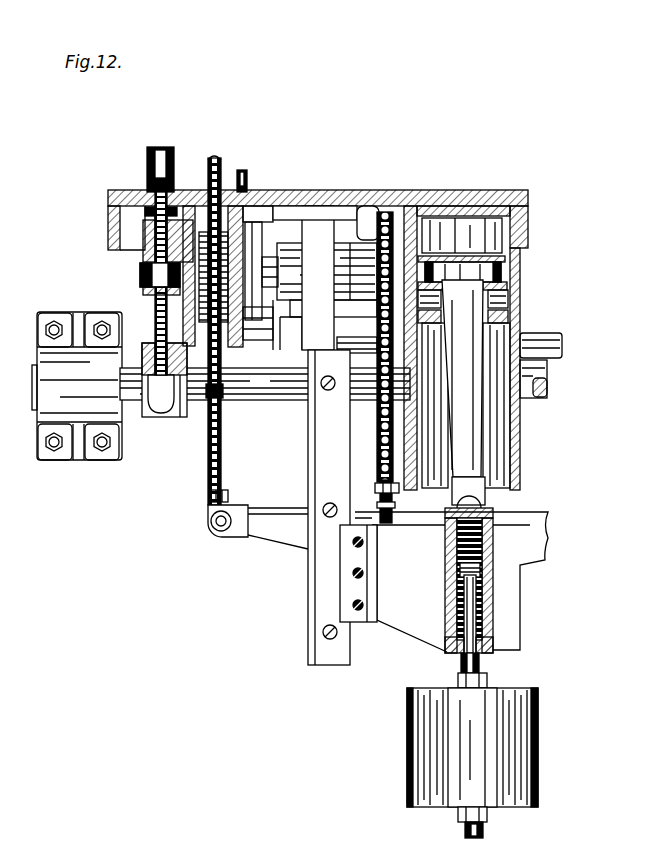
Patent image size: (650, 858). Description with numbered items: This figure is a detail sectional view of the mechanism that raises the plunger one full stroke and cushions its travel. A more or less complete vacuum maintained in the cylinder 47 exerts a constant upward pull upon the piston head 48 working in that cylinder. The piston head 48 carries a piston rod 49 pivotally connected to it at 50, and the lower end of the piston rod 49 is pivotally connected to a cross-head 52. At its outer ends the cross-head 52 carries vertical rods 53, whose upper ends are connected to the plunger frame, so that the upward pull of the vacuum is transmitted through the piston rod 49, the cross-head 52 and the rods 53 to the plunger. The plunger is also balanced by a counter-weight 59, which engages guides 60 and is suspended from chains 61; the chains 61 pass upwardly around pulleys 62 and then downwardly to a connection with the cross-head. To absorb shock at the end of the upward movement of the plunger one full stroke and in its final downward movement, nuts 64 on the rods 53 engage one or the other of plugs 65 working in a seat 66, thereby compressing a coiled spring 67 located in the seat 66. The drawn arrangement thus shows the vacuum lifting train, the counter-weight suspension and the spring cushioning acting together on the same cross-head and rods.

The cylinder 47 is at (508, 300).
The piston head 48 is at (490, 246).
The piston rod 49 is at (470, 426).
The pivotal connection 50 is at (508, 314).
The cross-head 52 is at (285, 535).
The vertical rods 53 is at (228, 455).
The counter-weight 59 is at (451, 582).
The guides 60 is at (340, 648).
The chains 61 is at (377, 455).
The pulleys 62 is at (377, 210).
The nuts 64 is at (213, 403).
The plugs 65 is at (204, 210).
The seat 66 is at (190, 313).
The coiled spring 67 is at (190, 338).